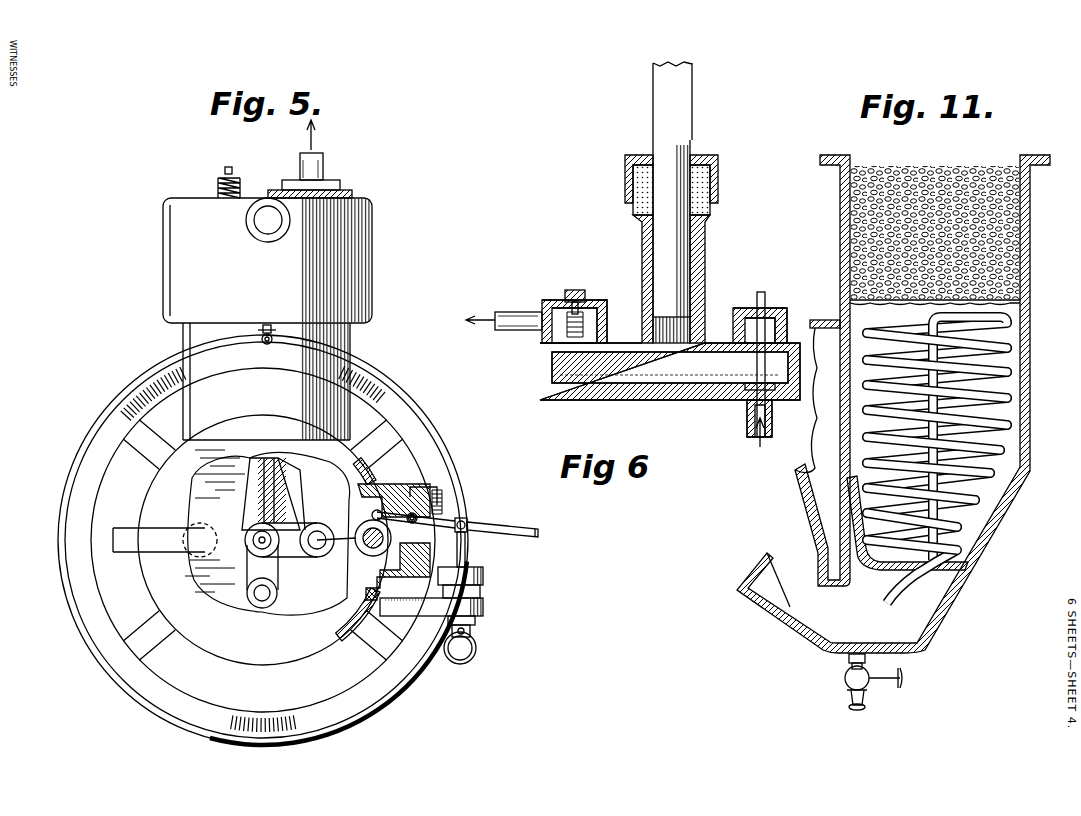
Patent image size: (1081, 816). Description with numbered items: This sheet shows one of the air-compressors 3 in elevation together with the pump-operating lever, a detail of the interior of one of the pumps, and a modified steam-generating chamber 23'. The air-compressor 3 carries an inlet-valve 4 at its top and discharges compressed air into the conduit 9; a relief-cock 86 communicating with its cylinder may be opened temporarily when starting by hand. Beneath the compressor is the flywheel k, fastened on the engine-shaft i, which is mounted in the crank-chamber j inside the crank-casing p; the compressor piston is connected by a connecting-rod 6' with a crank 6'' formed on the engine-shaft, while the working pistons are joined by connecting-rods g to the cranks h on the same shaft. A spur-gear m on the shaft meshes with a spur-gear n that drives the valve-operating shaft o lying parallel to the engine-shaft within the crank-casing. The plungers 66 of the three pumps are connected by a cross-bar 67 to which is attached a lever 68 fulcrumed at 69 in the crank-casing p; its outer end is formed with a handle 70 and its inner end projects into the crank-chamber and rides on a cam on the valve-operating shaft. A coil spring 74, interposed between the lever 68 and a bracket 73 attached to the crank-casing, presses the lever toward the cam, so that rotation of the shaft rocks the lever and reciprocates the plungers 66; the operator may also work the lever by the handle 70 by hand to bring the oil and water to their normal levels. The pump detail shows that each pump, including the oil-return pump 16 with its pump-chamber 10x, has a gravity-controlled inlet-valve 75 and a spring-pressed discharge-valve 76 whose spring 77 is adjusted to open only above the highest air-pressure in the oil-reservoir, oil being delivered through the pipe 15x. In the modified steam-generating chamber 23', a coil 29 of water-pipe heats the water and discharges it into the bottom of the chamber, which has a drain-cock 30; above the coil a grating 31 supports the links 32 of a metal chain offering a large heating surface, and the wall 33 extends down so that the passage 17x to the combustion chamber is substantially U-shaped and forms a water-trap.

In FIG. 5, the air-compressor 3 is at (267, 395).
In FIG. 5, the inlet-valve 4 is at (209, 195).
In FIG. 5, the conduit 9 is at (323, 163).
In FIG. 5, the relief-cock 86 is at (265, 350).
In FIG. 5, the flywheel k is at (59, 497).
In FIG. 5, the crank-casing p is at (335, 643).
In FIG. 5, the crank h is at (205, 512).
In FIG. 5, the connecting-rod 6' is at (245, 494).
In FIG. 5, the crank 6'' is at (290, 588).
In FIG. 5, the engine-shaft i is at (255, 548).
In FIG. 5, the crank-chamber j is at (300, 550).
In FIG. 5, the connecting-rod g is at (292, 503).
In FIG. 5, the valve-operating shaft o is at (285, 565).
In FIG. 5, the spur-gear m is at (356, 548).
In FIG. 5, the spur-gear n is at (372, 514).
In FIG. 5, the bracket 73 is at (416, 484).
In FIG. 5, the coil spring 74 is at (440, 505).
In FIG. 5, the fulcrum 69 is at (414, 516).
In FIG. 5, the lever 68 is at (463, 522).
In FIG. 5, the cross-bar 67 is at (466, 527).
In FIG. 5, the handle 70 is at (540, 533).
In FIG. 5, the plunger 66 is at (468, 548).
In FIG. 6, the plunger 66 is at (668, 242).
In FIG. 5, the oil-return pump 16 is at (484, 595).
In FIG. 6, the valve chest 10x is at (670, 277).
In FIG. 6, the spring 77 is at (570, 326).
In FIG. 6, the discharge-valve 76 is at (596, 328).
In FIG. 6, the inlet-valve 75 is at (788, 362).
In FIG. 6, the pipe 15x is at (748, 440).
In FIG. 11, the steam-generating chamber 23' is at (904, 404).
In FIG. 11, the grating 31 is at (840, 288).
In FIG. 11, the links 32 is at (842, 228).
In FIG. 11, the passage 17x is at (814, 600).
In FIG. 11, the coil 29 is at (1006, 425).
In FIG. 11, the wall 33 is at (815, 568).
In FIG. 11, the drain-cock 30 is at (847, 681).